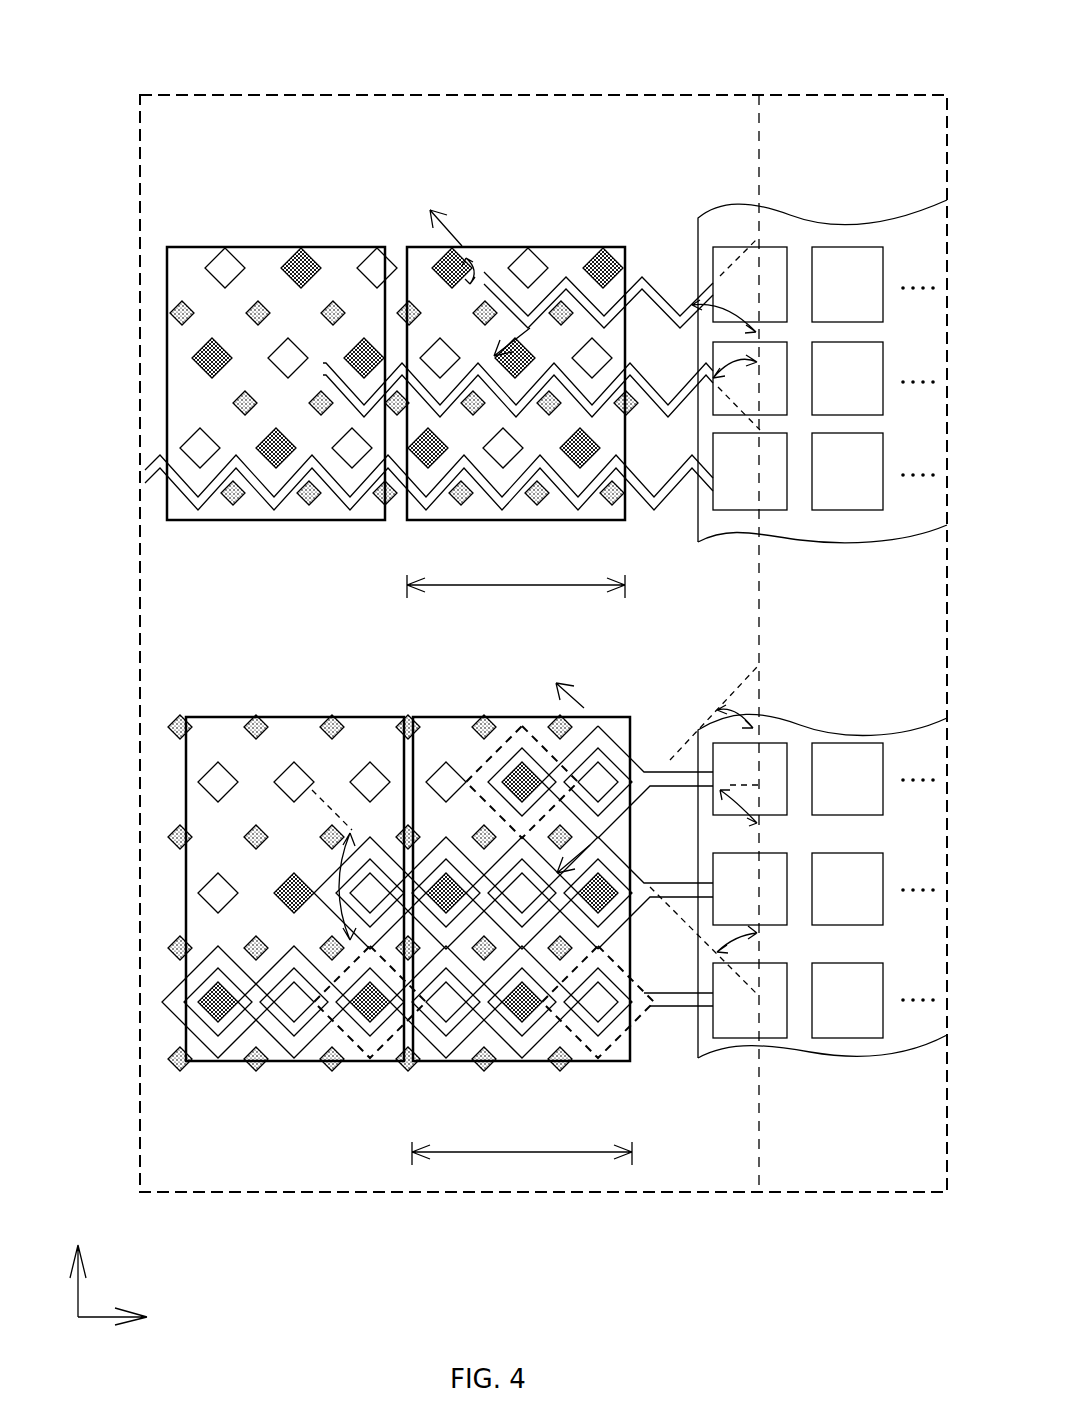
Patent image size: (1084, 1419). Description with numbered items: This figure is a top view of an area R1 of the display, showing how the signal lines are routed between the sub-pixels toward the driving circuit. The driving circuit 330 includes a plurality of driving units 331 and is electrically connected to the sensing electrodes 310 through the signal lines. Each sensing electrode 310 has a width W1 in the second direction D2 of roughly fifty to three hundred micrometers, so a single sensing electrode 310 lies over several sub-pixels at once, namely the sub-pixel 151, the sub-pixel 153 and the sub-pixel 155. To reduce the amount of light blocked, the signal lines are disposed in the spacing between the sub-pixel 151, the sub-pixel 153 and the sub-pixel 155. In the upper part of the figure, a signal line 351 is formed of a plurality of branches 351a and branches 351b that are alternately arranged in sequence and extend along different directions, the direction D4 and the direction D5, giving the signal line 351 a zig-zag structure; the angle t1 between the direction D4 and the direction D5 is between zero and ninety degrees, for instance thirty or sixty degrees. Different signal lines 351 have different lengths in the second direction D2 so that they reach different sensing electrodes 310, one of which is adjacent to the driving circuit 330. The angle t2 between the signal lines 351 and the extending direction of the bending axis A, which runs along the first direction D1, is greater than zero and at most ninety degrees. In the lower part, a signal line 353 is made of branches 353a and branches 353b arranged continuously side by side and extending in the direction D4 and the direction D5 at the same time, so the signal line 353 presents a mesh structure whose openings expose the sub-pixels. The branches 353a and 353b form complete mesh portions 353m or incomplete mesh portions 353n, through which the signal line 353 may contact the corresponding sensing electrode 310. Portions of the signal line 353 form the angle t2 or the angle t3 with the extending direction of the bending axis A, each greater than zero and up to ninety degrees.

The area R1 is at (556, 95).
The bending axis A is at (764, 112).
The sensing electrode 310 is at (183, 247).
The sub-pixel 151 is at (235, 258).
The sub-pixel 153 is at (262, 300).
The sub-pixel 155 is at (302, 255).
The signal line 351 is at (452, 382).
The branch 351a is at (495, 247).
The branch 351b is at (575, 247).
The signal line 353 is at (461, 876).
The branch 353a is at (646, 768).
The branch 353b is at (652, 786).
The complete mesh portion 353m is at (491, 1043).
The incomplete mesh portion 353n is at (500, 748).
The driving circuit 330 is at (848, 215).
The driving unit 331 is at (728, 300).
The width W1 is at (519, 860).
The first direction D1 is at (73, 1267).
The second direction D2 is at (132, 1321).
The direction D4 is at (462, 246).
The direction D5 is at (512, 335).
The angle θ1 t1 is at (334, 870).
The angle θ2 t2 is at (740, 333).
The angle θ3 t3 is at (752, 822).